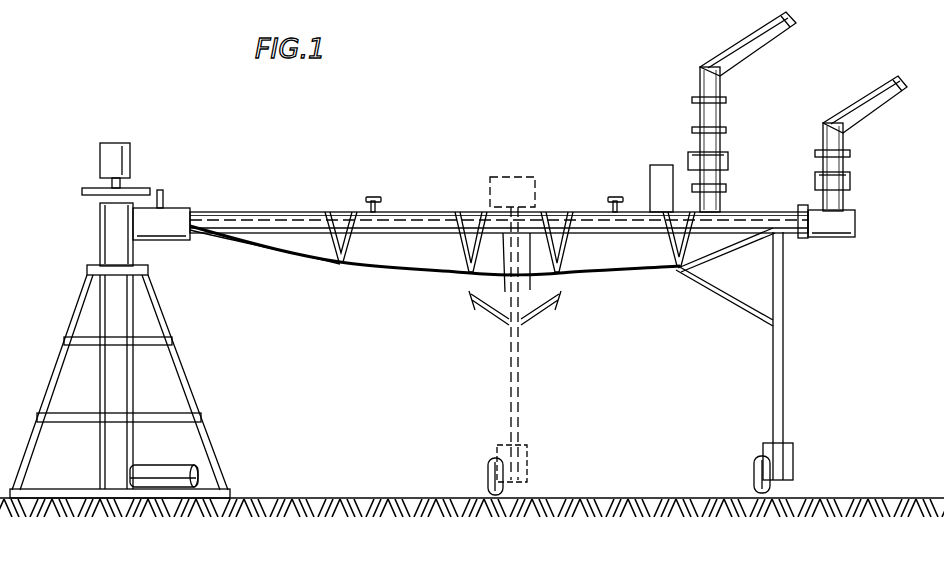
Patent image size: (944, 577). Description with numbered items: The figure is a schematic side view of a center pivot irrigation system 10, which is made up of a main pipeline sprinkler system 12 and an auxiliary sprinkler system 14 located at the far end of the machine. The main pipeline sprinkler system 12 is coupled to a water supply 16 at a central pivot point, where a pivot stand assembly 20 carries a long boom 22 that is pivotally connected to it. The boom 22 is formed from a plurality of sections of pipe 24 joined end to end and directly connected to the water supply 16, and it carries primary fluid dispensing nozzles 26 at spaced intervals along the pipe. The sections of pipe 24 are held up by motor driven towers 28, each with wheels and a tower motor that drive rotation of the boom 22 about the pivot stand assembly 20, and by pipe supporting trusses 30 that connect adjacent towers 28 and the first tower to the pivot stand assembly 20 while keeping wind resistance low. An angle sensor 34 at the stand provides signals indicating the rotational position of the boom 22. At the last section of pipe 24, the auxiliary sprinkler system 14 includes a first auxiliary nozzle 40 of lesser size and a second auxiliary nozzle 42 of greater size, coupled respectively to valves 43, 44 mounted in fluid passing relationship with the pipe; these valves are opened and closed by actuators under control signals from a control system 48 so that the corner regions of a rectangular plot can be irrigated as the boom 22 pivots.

The center pivot irrigation system 10 is at (362, 387).
The main pipeline sprinkler system 12 is at (546, 165).
The auxiliary sprinkler system 14 is at (797, 108).
The water supply 16 is at (172, 487).
The pivot stand assembly 20 is at (202, 397).
The boom 22 is at (269, 206).
The sections of pipe 24 is at (417, 212).
The primary fluid dispensing nozzles 26 is at (374, 196).
The motor driven towers 28 is at (524, 356).
The pipe supporting trusses 30 is at (432, 283).
The angle sensor 34 is at (159, 178).
The first auxiliary nozzle 40 is at (845, 135).
The second auxiliary nozzle 42 is at (721, 80).
The valve 43 is at (851, 180).
The valve 44 is at (729, 160).
The control system 48 is at (661, 164).